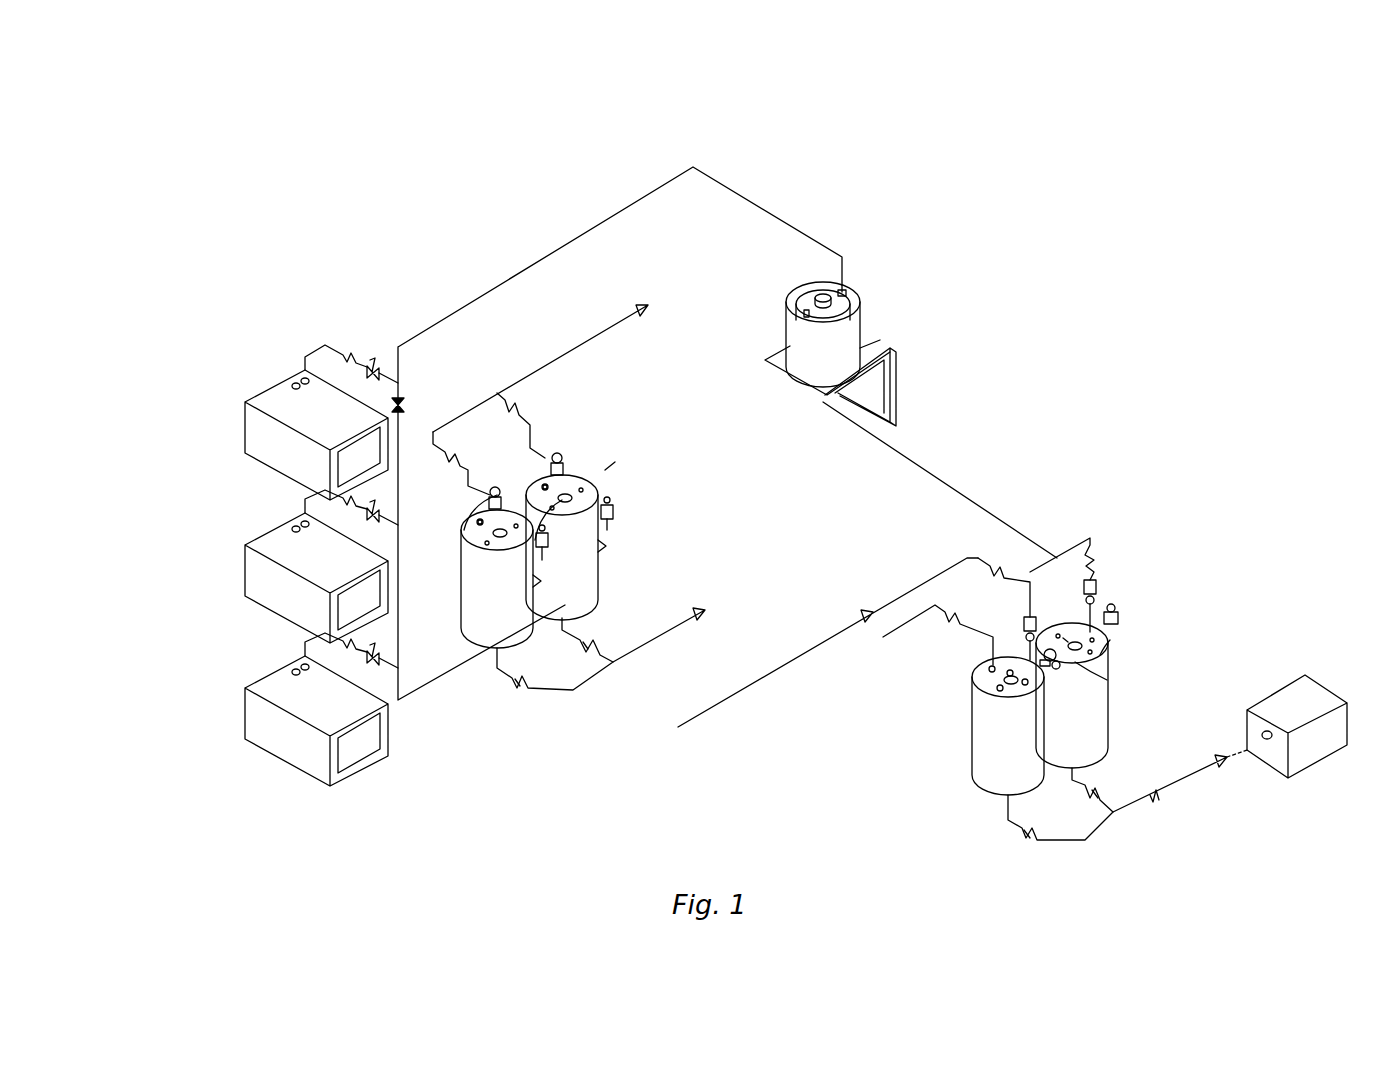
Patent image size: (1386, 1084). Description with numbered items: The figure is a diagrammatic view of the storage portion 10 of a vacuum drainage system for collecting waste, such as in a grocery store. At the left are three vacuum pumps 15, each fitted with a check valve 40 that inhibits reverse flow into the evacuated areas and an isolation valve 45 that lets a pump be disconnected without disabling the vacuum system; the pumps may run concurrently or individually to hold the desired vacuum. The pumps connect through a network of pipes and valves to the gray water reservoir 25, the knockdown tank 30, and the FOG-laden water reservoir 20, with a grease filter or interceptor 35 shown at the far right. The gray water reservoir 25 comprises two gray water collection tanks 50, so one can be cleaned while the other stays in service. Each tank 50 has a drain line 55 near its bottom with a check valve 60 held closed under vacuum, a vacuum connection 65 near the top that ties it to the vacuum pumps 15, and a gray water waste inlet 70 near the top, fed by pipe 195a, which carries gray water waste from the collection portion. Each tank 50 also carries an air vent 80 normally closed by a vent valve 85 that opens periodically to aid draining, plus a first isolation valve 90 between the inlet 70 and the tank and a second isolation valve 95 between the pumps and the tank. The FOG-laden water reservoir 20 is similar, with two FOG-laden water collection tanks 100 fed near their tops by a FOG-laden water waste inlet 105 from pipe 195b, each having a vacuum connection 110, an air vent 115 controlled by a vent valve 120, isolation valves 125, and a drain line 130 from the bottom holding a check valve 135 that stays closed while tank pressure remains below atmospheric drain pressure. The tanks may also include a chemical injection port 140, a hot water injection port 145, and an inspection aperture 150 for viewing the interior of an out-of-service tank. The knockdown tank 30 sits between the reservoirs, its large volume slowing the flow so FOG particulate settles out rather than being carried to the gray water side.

The storage portion 10 is at (931, 141).
The vacuum pumps 15 is at (253, 433).
The FOG-laden water reservoir 20 is at (1135, 668).
The gray water reservoir 25 is at (617, 463).
The knockdown tank 30 is at (850, 338).
The grease filter or interceptor 35 is at (1300, 763).
The check valve 40 is at (348, 352).
The isolation valve 45 is at (373, 365).
The gray water collection tank 50 is at (519, 603).
The drain line 55 is at (575, 604).
The check valve 60 is at (572, 690).
The vacuum connection 65 is at (598, 491).
The gray water waste inlet 70 is at (540, 492).
The air vent 80 is at (487, 487).
The vent valve 85 is at (490, 493).
The first isolation valve 90 is at (447, 437).
The second isolation valve 95 is at (603, 540).
The FOG-laden water collection tank 100 is at (1040, 758).
The FOG-laden water waste inlet 105 is at (992, 668).
The vacuum connection 110 is at (1112, 630).
The air vent 115 is at (1115, 622).
The vent valve 120 is at (1112, 614).
The isolation valves 125 is at (1005, 572).
The drain line 130 is at (1063, 845).
The check valve 135 is at (1095, 792).
The chemical injection port 140 is at (1100, 655).
The hot water injection port 145 is at (1107, 680).
The inspection aperture 150 is at (1098, 572).
The pipe 195a is at (607, 327).
The pipe 195b is at (687, 723).